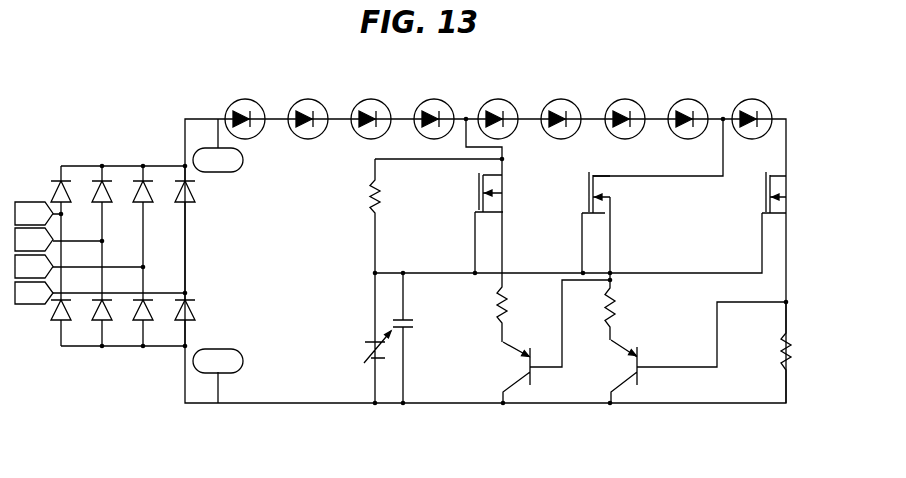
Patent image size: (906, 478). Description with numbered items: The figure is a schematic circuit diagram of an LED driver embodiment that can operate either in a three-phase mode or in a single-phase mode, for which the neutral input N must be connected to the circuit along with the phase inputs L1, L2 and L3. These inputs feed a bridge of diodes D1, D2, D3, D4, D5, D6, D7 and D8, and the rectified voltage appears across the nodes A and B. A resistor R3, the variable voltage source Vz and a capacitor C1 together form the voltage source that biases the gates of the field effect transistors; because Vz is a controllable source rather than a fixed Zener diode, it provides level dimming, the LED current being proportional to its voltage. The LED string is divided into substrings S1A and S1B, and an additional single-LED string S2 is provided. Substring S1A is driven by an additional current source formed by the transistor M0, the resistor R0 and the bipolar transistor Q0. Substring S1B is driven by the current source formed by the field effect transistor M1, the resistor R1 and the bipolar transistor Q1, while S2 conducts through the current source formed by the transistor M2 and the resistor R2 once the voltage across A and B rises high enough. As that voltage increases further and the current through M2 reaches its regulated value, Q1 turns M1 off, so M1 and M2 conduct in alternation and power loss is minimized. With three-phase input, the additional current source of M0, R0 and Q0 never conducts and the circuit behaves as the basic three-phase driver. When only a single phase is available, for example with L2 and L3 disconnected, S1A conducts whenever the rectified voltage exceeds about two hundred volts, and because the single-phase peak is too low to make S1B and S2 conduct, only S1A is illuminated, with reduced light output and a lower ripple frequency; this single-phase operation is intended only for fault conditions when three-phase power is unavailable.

The line 1 AC input L1 is at (34, 213).
The phase input L2 is at (34, 239).
The phase input L3 is at (34, 266).
The neutral input N is at (34, 293).
The rectifier diode D1 is at (74, 195).
The rectifier diode D2 is at (74, 323).
The rectifier diode D3 is at (115, 195).
The rectifier diode D4 is at (115, 323).
The rectifier diode D5 is at (156, 195).
The rectifier diode D6 is at (156, 323).
The rectifier diode D7 is at (198, 195).
The rectifier diode D8 is at (198, 323).
The rectified voltage node A is at (218, 160).
The rectified voltage node B is at (218, 361).
The LED substring S1A is at (339, 106).
The LED substring S1B is at (593, 106).
The additional LED string S2 is at (752, 106).
The resistor R3 is at (393, 216).
The transistor M0 is at (506, 192).
The field effect transistor M1 is at (613, 192).
The field effect transistor M2 is at (757, 192).
The capacitor C1 is at (415, 338).
The variable voltage source Vz is at (367, 338).
The resistor R0 is at (519, 307).
The resistor R1 is at (626, 310).
The resistor R2 is at (769, 352).
The bipolar transistor Q0 is at (504, 372).
The bipolar transistor Q1 is at (612, 371).